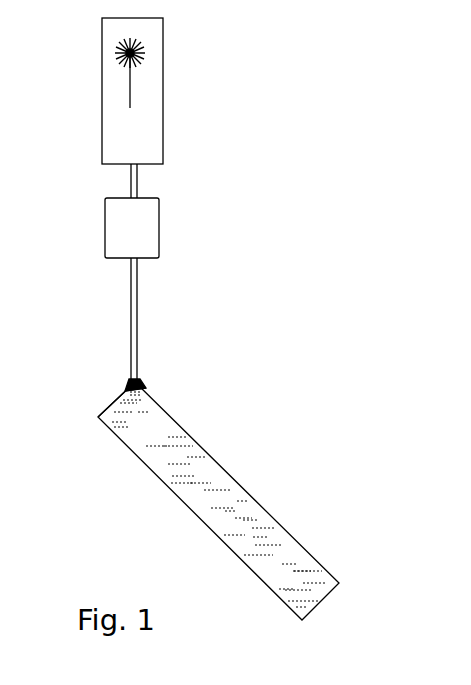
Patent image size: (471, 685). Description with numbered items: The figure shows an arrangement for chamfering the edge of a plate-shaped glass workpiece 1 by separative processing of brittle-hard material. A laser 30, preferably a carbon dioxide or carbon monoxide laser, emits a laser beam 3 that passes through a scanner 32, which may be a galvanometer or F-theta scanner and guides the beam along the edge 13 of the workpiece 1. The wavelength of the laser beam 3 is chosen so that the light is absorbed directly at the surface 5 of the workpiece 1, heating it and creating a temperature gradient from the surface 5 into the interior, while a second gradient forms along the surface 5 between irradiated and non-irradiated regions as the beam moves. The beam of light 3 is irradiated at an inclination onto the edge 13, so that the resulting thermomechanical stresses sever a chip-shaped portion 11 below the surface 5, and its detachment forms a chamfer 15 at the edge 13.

The workpiece 1 is at (301, 519).
The laser beam 3 is at (138, 334).
The surface 5 is at (192, 437).
The portion 11 is at (138, 386).
The edge 13 is at (118, 400).
The chamfer 15 is at (135, 388).
The laser 30 is at (163, 125).
The scanner 32 is at (159, 230).